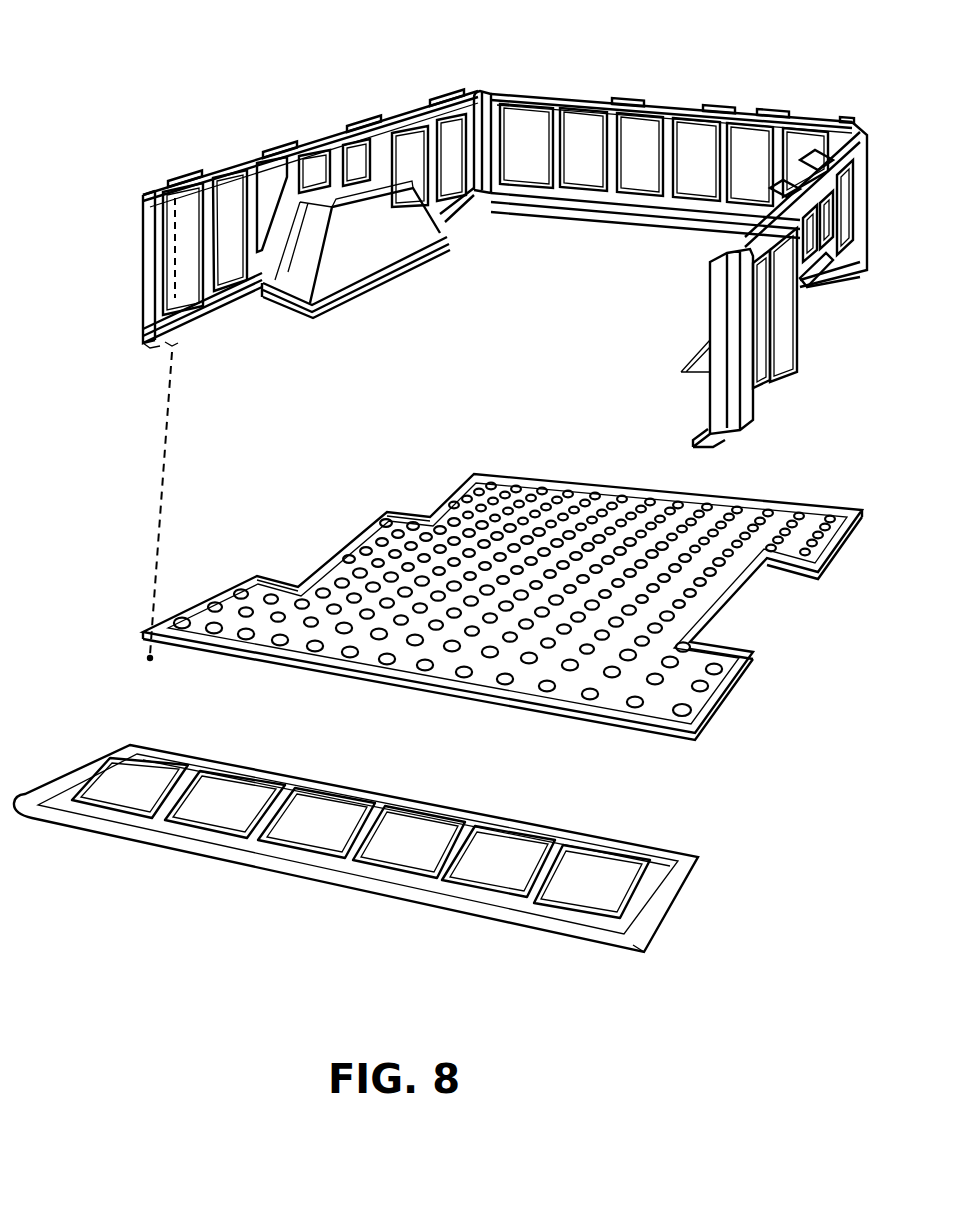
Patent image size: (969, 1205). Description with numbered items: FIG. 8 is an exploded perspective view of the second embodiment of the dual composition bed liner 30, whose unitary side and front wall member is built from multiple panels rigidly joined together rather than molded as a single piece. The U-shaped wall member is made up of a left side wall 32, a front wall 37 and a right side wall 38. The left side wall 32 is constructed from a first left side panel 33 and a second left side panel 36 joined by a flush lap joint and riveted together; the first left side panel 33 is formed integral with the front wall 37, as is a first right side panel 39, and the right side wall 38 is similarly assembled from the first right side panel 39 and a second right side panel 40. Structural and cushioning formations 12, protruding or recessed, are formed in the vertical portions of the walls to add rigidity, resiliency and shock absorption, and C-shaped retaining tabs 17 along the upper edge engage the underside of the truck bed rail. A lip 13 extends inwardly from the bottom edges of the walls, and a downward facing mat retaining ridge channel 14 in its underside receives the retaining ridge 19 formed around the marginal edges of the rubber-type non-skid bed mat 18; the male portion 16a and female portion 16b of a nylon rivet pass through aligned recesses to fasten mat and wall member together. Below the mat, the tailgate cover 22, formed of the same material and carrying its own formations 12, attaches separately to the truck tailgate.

The structural and cushioning formations 12 is at (357, 153).
The lip 13 is at (145, 344).
The mat retaining ridge channel 14 is at (172, 347).
The male portion of nylon rivet 16a is at (177, 180).
The female portion of nylon rivet 16b is at (152, 523).
The tab 17 is at (275, 152).
The bed mat 18 is at (360, 572).
The retaining ridge 19 is at (238, 587).
The tailgate cover 22 is at (340, 857).
The dual composition bed liner 30 is at (233, 43).
The left side wall 32 is at (337, 120).
The first left side panel 33 is at (470, 91).
The second left side panel 36 is at (264, 283).
The front wall 37 is at (572, 104).
The right side wall 38 is at (804, 263).
The first right side panel 39 is at (846, 287).
The second right side panel 40 is at (762, 392).